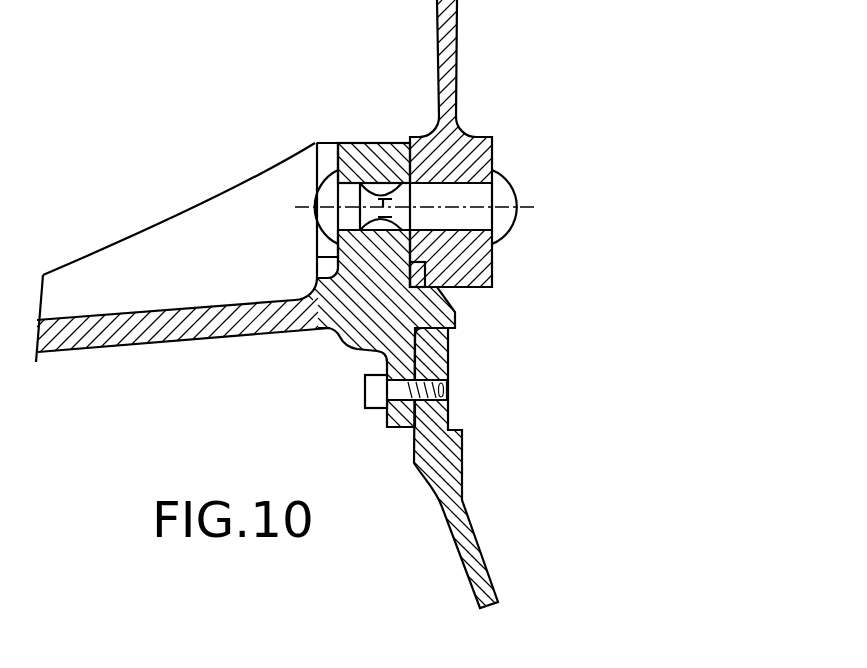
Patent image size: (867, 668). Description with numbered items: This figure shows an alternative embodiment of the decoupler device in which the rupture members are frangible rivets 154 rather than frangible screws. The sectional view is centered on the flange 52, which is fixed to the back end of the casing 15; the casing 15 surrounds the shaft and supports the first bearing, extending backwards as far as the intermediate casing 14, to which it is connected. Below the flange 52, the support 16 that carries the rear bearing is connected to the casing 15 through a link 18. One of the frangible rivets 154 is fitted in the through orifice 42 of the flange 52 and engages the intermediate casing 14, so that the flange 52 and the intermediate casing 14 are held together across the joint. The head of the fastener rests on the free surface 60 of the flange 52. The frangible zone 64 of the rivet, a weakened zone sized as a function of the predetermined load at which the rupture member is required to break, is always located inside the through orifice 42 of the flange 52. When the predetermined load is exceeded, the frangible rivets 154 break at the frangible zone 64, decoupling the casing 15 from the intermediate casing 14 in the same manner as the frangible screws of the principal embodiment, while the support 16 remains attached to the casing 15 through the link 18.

The intermediate casing 14 is at (457, 28).
The casing 15 is at (87, 348).
The support 16 is at (467, 552).
The link 18 is at (378, 398).
The through orifice 42 is at (398, 184).
The flange 52 is at (355, 287).
The free surface 60 is at (338, 257).
The frangible zone 64 is at (393, 220).
The frangible rivets 154 is at (290, 176).